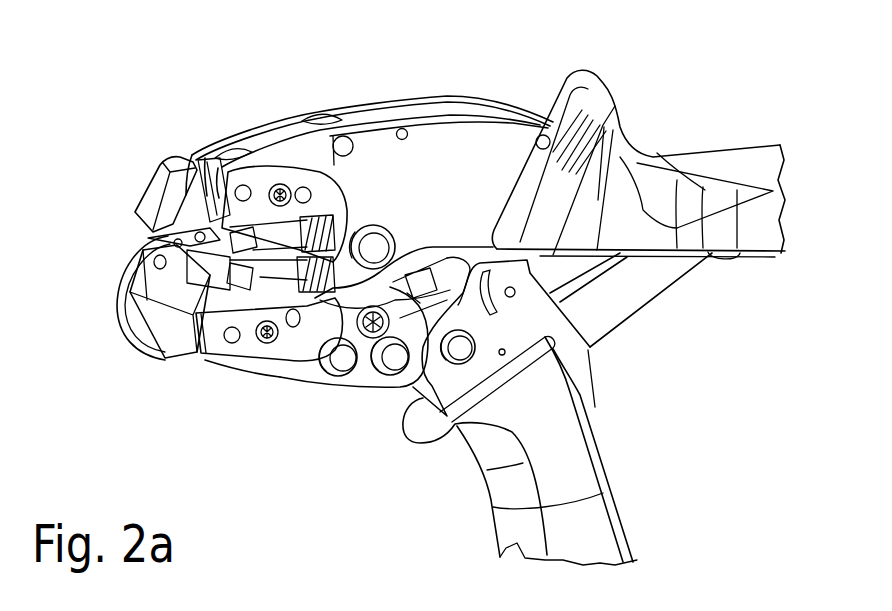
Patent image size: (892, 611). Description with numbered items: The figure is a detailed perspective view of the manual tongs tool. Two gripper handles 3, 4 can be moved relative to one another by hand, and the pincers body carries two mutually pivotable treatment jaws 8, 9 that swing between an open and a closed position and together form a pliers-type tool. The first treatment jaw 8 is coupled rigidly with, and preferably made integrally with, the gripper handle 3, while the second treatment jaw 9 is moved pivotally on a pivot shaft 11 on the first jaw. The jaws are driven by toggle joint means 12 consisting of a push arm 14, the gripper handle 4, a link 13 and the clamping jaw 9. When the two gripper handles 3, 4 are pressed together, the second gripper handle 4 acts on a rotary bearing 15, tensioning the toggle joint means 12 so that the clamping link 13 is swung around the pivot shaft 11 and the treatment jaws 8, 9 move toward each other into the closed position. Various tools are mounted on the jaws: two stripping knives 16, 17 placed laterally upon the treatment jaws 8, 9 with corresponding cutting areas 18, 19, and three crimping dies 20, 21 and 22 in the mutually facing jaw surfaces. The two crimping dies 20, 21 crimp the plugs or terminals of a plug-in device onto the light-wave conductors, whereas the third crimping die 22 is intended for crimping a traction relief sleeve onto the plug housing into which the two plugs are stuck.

The gripper handle 3 is at (757, 215).
The gripper handle 4 is at (568, 478).
The treatment jaw 8 is at (157, 188).
The treatment jaw 9 is at (165, 333).
The pivot shaft 11 is at (376, 245).
The toggle joint means 12 is at (540, 271).
The link 13 is at (357, 378).
The push arm 14 is at (650, 270).
The rotary bearing 15 is at (460, 350).
The stripping knife 16 is at (327, 193).
The stripping knife 17 is at (313, 316).
The cutting area 18 is at (404, 131).
The cutting area 19 is at (297, 305).
The crimping die 20 is at (265, 235).
The crimping die 21 is at (231, 228).
The crimping die 22 is at (193, 200).